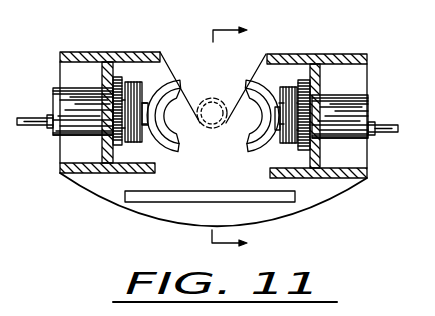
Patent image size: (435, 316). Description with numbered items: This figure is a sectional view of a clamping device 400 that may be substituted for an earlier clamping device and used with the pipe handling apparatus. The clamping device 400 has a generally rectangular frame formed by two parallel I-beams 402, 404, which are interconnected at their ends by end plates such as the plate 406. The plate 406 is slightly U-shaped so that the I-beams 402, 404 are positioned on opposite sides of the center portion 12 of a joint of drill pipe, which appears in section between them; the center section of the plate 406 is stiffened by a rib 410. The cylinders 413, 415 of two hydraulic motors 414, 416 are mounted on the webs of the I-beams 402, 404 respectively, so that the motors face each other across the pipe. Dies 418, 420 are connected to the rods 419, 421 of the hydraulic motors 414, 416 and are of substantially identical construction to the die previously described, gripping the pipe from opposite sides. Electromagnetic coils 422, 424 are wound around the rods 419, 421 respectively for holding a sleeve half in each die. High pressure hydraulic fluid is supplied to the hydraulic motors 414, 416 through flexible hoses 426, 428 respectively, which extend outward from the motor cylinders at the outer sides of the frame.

The clamping device 400 is at (374, 62).
The I-beam 402 is at (320, 63).
The I-beam 404 is at (107, 52).
The plate 406 is at (327, 190).
The rib 410 is at (163, 197).
The cylinder 413 is at (348, 96).
The hydraulic motor 414 is at (356, 143).
The cylinder 415 is at (70, 88).
The hydraulic motor 416 is at (57, 138).
The die 418 is at (252, 81).
The rod 419 is at (270, 146).
The die 420 is at (168, 86).
The rod 421 is at (150, 146).
The electromagnetic coil 422 is at (290, 87).
The electromagnetic coil 424 is at (133, 82).
The flexible hose 426 is at (387, 125).
The flexible hose 428 is at (27, 118).
The center portion 12 is at (211, 97).